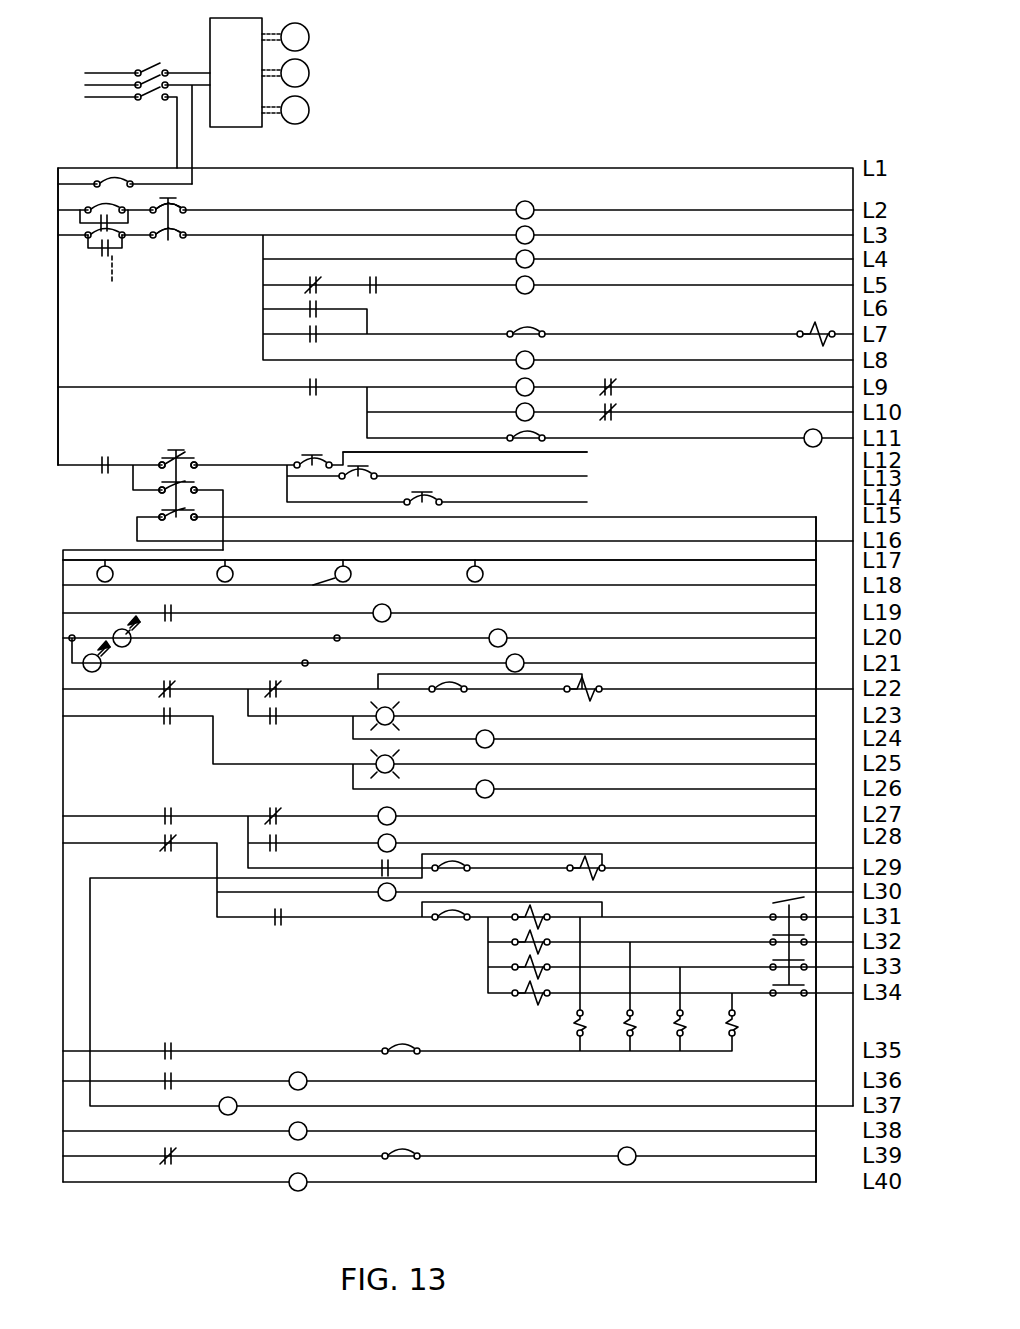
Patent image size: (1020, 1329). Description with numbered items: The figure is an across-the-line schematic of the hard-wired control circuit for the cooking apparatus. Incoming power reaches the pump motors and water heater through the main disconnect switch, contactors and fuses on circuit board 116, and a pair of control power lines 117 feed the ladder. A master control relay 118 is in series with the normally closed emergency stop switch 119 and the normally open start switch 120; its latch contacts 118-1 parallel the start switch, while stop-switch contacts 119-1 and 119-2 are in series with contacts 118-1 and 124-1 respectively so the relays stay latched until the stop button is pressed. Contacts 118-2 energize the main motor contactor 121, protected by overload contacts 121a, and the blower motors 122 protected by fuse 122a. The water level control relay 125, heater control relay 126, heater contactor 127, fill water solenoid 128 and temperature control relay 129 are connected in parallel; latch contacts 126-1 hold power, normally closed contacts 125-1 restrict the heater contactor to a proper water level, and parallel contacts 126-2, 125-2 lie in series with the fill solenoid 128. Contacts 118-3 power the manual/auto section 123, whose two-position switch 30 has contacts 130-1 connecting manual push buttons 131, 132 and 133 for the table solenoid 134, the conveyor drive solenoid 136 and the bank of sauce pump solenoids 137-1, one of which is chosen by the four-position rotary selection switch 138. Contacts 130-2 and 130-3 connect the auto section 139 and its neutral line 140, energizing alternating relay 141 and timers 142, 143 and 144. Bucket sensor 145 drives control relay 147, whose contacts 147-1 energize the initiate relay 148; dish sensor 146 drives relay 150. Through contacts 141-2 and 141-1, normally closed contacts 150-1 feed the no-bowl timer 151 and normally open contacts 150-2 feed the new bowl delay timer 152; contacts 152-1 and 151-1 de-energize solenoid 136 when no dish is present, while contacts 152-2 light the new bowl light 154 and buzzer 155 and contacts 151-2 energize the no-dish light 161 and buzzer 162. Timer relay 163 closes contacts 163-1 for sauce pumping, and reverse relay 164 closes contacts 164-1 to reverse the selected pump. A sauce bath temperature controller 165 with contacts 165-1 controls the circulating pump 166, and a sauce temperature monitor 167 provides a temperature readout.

The circuit board 116 is at (222, 101).
The push button start switch 120 is at (83, 205).
The emergency push button stop switch 119 is at (192, 184).
The normally closed contacts 119-1 is at (180, 200).
The latch contacts 118-1 is at (107, 213).
The normally closed contacts 119-2 is at (160, 243).
The normally open contacts 124-1 is at (106, 258).
The control power line 117 is at (60, 365).
The master control relay 118 is at (530, 203).
The water level control relay 125 is at (517, 239).
The heater control relay 126 is at (517, 263).
The heater contactor 127 is at (533, 292).
The normally closed contacts 125-1 is at (313, 280).
The latch contacts 126-1 is at (373, 294).
The relay contact 126-2 is at (303, 311).
The relay contact 125-2 is at (313, 342).
The fill water solenoid 128 is at (798, 332).
The cooking water temperature control relay 129 is at (534, 355).
The normally open contact 118-2 is at (312, 383).
The main motor contactor 121 is at (517, 410).
The overload contacts 121a is at (614, 415).
The fuse 122a is at (508, 434).
The blower motors 122 is at (808, 447).
The selector switch 30 is at (176, 452).
The normally open contacts 118-3 is at (120, 456).
The normally closed contacts 130-1 is at (196, 458).
The manual push button table switch 131 is at (350, 430).
The manual/auto control section 123 is at (269, 499).
The bucket push button switch 132 is at (348, 480).
The normally open contacts 130-2 is at (160, 487).
The normally open contacts 130-3 is at (160, 521).
The push button sauce switch 133 is at (422, 506).
The auto control section 139 is at (678, 587).
The alternating relay 141 is at (100, 580).
The timer 142 is at (228, 580).
The timer 143 is at (313, 584).
The timer 144 is at (480, 580).
The initiate control relay 148 is at (390, 607).
The bucket sensor 145 is at (112, 630).
The normally open contact 147-1 is at (170, 620).
The control relay 147 is at (490, 644).
The dish relay 150 is at (521, 658).
The dish sensor 146 is at (92, 670).
The contacts 152-1 is at (271, 678).
The normally closed contacts 151-1 is at (168, 696).
The new bowl light 154 is at (394, 712).
The conveyor drive solenoid 136 is at (572, 694).
The neutral line 140 is at (816, 752).
The normally open contacts 151-2 is at (184, 736).
The normally open contacts 152-2 is at (290, 724).
The no-dish warning light 161 is at (401, 760).
The buzzer 155 is at (492, 746).
The buzzer 162 is at (494, 786).
The normally open contacts 141-2 is at (168, 806).
The normally closed contacts 150-1 is at (273, 806).
The normally open contacts 150-2 is at (274, 835).
The no bowl timer 151 is at (394, 812).
The new bowl delay timer 152 is at (378, 838).
The normally closed contacts 141-1 is at (170, 852).
The table solenoid 134 is at (575, 872).
The timer relay 163 is at (380, 900).
The normally open contacts 163-1 is at (278, 929).
The heater thermal overloads 137-1 is at (480, 1013).
The rotary selection switch 138 is at (789, 1000).
The normally open contacts 164-1 is at (168, 1042).
The sauce pump reverse relay 164 is at (305, 1088).
The sauce bath temperature controller 165 is at (307, 1125).
The normally closed contacts 165-1 is at (170, 1160).
The circulating pump 166 is at (635, 1153).
The sauce temperature monitor 167 is at (305, 1178).